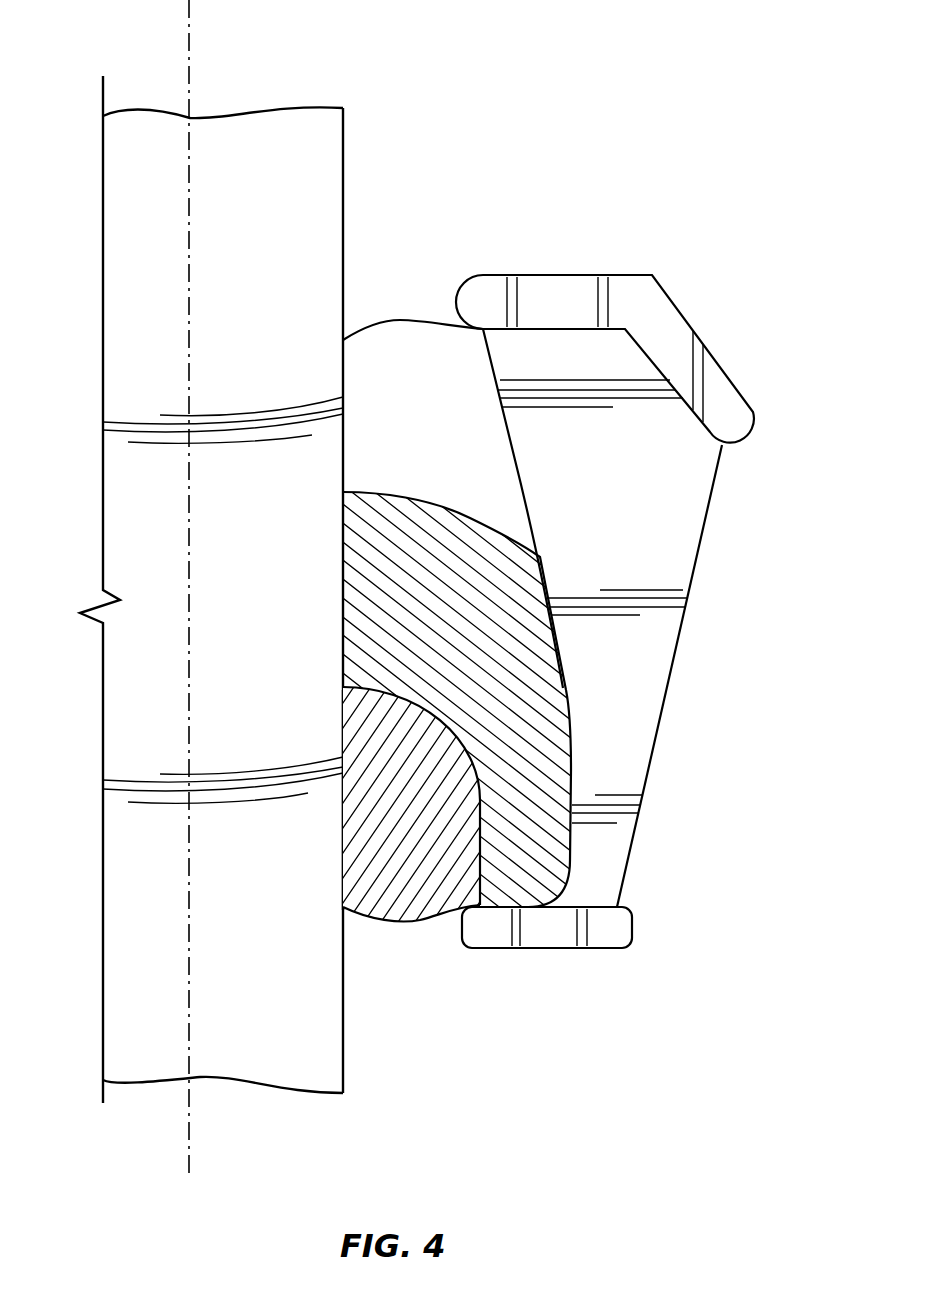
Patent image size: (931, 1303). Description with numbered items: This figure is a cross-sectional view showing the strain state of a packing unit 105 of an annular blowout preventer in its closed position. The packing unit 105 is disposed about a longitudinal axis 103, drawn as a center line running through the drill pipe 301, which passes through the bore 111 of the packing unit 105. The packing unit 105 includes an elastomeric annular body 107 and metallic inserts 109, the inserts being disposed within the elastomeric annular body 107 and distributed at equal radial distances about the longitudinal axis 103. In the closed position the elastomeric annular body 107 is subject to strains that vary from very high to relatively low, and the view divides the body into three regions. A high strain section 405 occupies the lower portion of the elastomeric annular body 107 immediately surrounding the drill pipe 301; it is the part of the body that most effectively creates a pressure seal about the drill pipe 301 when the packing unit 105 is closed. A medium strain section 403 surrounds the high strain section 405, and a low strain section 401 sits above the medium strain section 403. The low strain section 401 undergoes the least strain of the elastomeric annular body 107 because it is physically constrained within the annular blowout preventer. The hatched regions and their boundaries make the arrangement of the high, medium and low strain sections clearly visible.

The longitudinal axis 103 is at (189, 52).
The drill pipe 301 is at (345, 166).
The low strain section 401 is at (410, 340).
The packing unit 105 is at (646, 589).
The metallic inserts 109 is at (692, 520).
The medium strain section 403 is at (540, 684).
The elastomeric annular body 107 is at (578, 768).
The bore 111 is at (343, 872).
The high strain section 405 is at (400, 887).